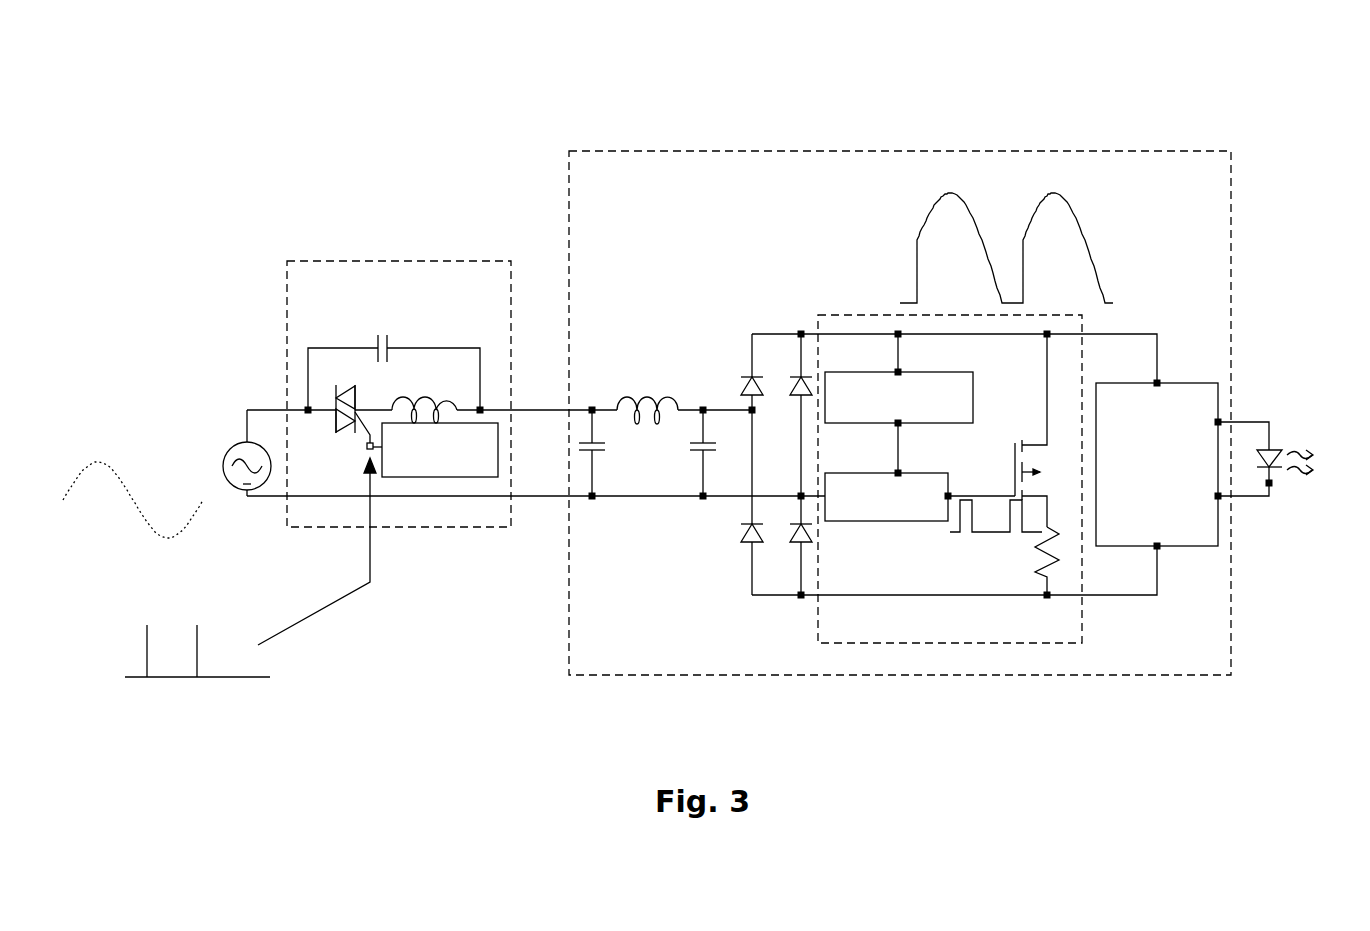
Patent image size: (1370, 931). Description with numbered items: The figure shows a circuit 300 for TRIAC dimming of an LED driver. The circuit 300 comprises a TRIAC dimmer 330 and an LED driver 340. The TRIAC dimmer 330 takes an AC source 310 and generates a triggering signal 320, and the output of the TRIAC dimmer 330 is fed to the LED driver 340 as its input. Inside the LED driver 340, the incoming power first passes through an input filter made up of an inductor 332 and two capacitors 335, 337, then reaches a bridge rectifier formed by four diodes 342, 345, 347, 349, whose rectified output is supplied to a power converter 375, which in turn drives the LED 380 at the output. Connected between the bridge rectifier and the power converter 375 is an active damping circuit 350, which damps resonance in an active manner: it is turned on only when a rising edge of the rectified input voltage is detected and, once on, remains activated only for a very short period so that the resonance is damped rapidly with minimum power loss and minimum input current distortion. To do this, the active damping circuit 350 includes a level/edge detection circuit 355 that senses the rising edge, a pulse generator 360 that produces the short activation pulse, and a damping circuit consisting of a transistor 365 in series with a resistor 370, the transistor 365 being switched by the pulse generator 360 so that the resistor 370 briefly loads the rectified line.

The circuit 300 is at (297, 95).
The AC source 310 is at (118, 460).
The triggering signal 320 is at (208, 635).
The TRIAC dimmer 330 is at (395, 255).
The input filter inductor 332 is at (633, 390).
The input filter capacitor 335 is at (605, 443).
The input filter capacitor 337 is at (700, 455).
The LED driver 340 is at (858, 150).
The bridge rectifier diode 342 is at (747, 377).
The bridge rectifier diode 345 is at (748, 543).
The bridge rectifier diode 347 is at (798, 377).
The bridge rectifier diode 349 is at (795, 543).
The active damping circuit 350 is at (817, 623).
The level/edge detection circuit 355 is at (973, 376).
The pulse generator 360 is at (913, 472).
The transistor 365 is at (1018, 440).
The resistor 370 is at (1043, 560).
The power converter 375 is at (1202, 367).
The LED 380 is at (1269, 435).